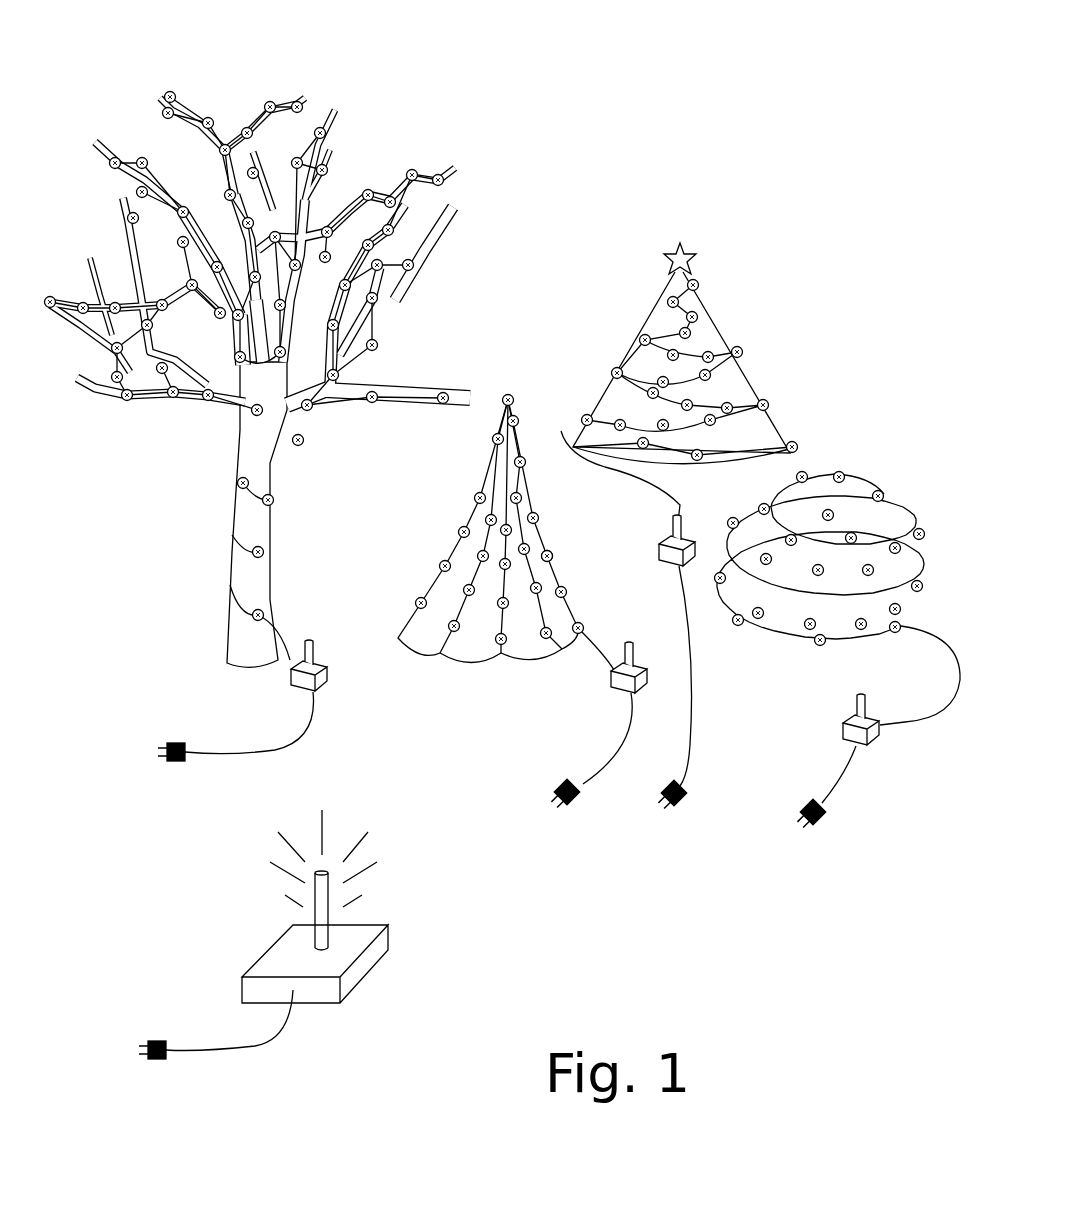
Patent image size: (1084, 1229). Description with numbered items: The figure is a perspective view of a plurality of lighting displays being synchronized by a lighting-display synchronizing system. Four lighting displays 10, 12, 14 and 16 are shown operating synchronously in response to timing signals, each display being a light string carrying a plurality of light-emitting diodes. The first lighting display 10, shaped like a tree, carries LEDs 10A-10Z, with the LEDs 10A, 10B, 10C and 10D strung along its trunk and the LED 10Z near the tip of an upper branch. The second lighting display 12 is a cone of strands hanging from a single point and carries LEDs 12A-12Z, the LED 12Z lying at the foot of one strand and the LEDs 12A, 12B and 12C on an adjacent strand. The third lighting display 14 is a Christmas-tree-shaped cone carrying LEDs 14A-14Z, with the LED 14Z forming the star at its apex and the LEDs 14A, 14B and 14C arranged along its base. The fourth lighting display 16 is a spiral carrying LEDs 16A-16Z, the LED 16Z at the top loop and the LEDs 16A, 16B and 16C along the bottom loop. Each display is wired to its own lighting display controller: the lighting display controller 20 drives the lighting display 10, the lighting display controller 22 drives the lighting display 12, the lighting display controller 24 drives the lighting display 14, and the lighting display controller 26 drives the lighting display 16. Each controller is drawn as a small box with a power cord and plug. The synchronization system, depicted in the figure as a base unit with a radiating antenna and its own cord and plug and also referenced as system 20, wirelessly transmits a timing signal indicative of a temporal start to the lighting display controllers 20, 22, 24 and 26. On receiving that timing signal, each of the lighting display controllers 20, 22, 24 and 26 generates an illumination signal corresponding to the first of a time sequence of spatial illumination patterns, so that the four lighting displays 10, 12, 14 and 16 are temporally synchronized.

The lighting display 10 is at (207, 425).
The light-emitting diode 10Z is at (308, 99).
The light-emitting diode 10A is at (278, 610).
The light-emitting diode 10B is at (278, 550).
The light-emitting diode 10C is at (278, 488).
The light-emitting diode 10D is at (232, 490).
The lighting display controller 20 is at (333, 670).
The lighting display 12 is at (474, 480).
The light-emitting diode 12Z is at (416, 601).
The light-emitting diode 12A is at (587, 626).
The light-emitting diode 12B is at (570, 589).
The light-emitting diode 12C is at (554, 552).
The lighting display controller 22 is at (610, 677).
The lighting display 14 is at (760, 380).
The light-emitting diode 14Z is at (668, 250).
The light-emitting diode 14A is at (795, 441).
The light-emitting diode 14B is at (702, 460).
The light-emitting diode 14C is at (559, 417).
The lighting display controller 24 is at (668, 565).
The lighting display 16 is at (872, 478).
The light-emitting diode 16Z is at (845, 473).
The light-emitting diode 16A is at (897, 638).
The light-emitting diode 16B is at (817, 650).
The light-emitting diode 16C is at (740, 630).
The lighting display controller 26 is at (878, 745).